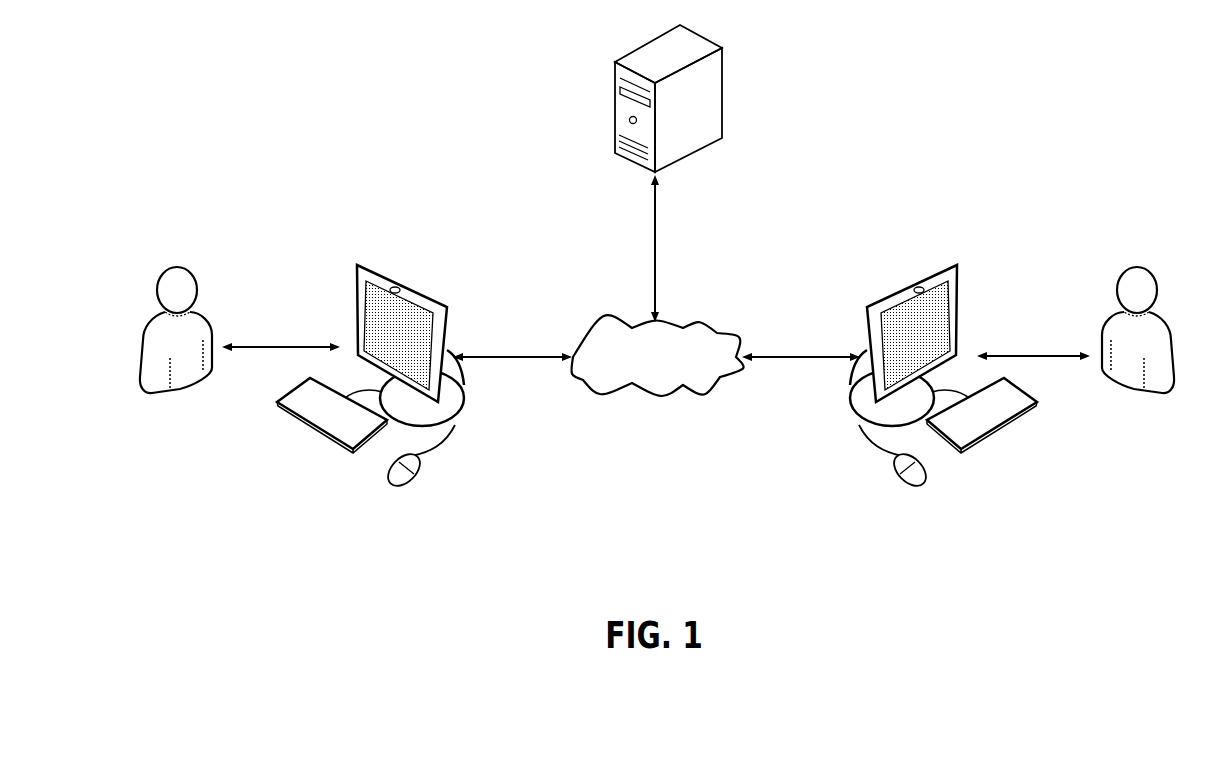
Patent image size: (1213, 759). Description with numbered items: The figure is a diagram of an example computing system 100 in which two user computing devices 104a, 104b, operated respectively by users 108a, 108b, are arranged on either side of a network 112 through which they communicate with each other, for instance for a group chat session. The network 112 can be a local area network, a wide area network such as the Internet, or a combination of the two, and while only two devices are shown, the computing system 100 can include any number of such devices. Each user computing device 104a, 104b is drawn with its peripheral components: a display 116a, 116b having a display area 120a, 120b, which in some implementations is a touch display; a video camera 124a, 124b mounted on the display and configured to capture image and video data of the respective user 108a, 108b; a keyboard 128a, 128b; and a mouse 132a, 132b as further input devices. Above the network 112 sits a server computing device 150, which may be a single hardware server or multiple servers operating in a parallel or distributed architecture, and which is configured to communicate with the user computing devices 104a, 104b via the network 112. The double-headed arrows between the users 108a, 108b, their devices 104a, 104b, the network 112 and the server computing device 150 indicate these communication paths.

The computing system 100 is at (155, 62).
The user computing device 104a is at (402, 372).
The user computing device 104b is at (914, 373).
The user 108a is at (176, 267).
The user 108b is at (1138, 267).
The network 112 is at (657, 392).
The display 116a is at (357, 282).
The display 116b is at (959, 282).
The display area 120a is at (430, 328).
The display area 120b is at (884, 328).
The video camera 124a is at (401, 286).
The video camera 124b is at (913, 286).
The keyboard 128a is at (312, 430).
The keyboard 128b is at (1005, 430).
The mouse 132a is at (409, 482).
The mouse 132b is at (908, 482).
The server computing device 150 is at (741, 164).